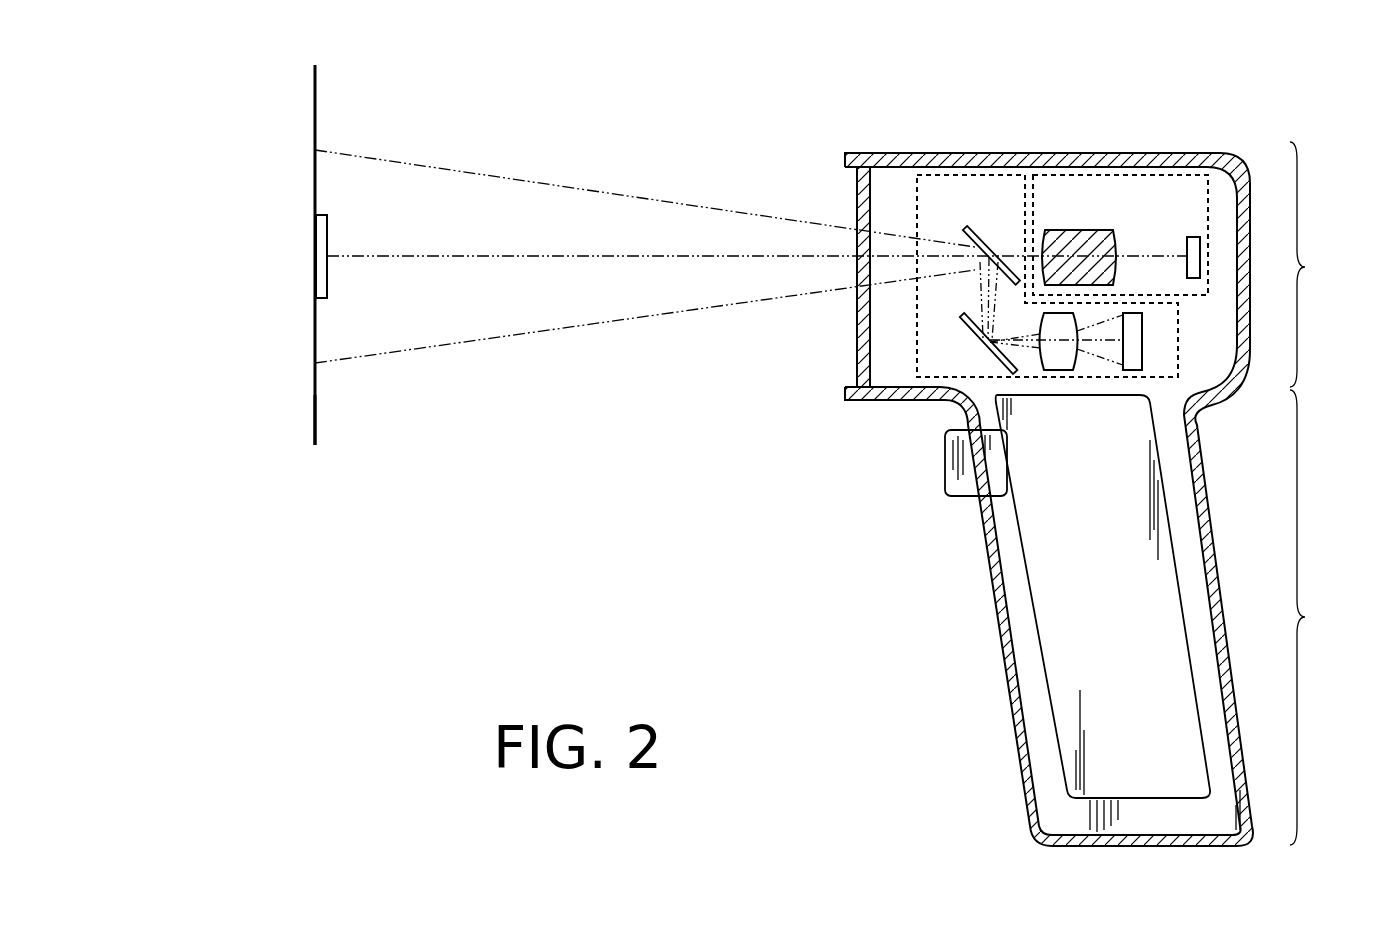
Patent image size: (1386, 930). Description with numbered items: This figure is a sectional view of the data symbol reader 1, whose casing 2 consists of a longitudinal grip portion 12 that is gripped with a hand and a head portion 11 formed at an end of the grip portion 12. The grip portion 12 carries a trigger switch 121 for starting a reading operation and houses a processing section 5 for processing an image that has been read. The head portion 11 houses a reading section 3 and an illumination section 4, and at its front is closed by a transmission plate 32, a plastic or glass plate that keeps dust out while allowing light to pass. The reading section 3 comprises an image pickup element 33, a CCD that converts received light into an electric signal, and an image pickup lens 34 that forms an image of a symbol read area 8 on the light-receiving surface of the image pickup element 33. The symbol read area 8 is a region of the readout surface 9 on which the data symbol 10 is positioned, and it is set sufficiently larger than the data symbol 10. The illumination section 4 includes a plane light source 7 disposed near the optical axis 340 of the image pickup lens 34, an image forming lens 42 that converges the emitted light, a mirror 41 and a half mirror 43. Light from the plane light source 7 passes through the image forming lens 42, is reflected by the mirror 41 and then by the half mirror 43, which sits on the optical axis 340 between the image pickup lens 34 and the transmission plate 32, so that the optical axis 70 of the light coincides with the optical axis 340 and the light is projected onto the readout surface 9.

The data symbol reader 1 is at (1069, 433).
The casing 2 is at (1037, 153).
The reading section 3 is at (1205, 296).
The illumination section 4 is at (917, 212).
The processing section 5 is at (1060, 678).
The plane light source 7 is at (1143, 343).
The symbol read area 8 is at (315, 344).
The readout surface 9 is at (315, 415).
The data symbol 10 is at (327, 220).
The head portion 11 is at (1320, 264).
The grip portion 12 is at (1321, 617).
The transmission plate 32 is at (862, 340).
The image pickup element 33 is at (1190, 237).
The image pickup lens 34 is at (1070, 230).
The mirror 41 is at (978, 340).
The image forming lens 42 is at (1060, 370).
The half mirror 43 is at (985, 240).
The optical axis of the light 70 is at (477, 257).
The trigger switch 121 is at (950, 467).
The optical axis of the image pickup lens 340 is at (557, 255).